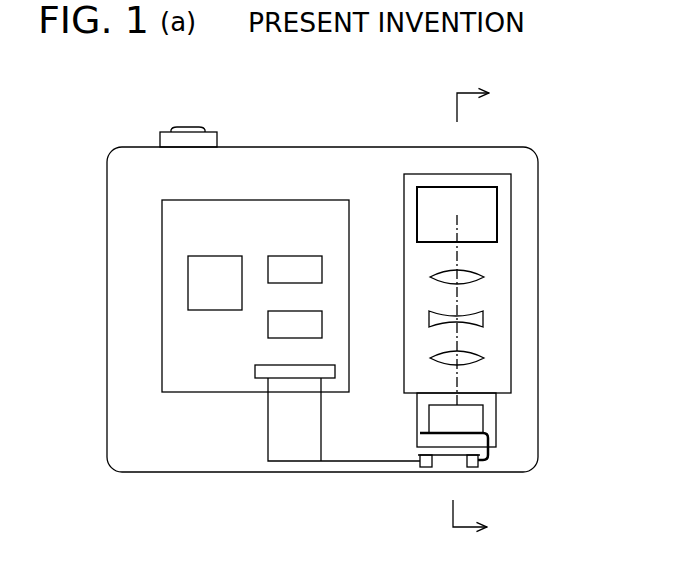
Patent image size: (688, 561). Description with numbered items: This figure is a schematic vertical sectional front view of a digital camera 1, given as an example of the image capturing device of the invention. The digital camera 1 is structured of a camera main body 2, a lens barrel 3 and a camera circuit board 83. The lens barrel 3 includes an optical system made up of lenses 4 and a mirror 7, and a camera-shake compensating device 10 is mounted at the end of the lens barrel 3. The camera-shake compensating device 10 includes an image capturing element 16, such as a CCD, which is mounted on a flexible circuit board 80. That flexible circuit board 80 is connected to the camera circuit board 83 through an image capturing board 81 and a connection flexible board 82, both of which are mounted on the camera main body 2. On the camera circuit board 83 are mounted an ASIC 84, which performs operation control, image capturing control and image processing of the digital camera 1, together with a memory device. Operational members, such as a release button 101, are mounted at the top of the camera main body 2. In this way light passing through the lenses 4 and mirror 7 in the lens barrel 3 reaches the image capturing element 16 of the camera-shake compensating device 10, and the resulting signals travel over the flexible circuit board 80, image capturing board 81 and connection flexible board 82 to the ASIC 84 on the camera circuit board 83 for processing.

The digital camera 1 is at (572, 151).
The camera main body 2 is at (377, 147).
The lens barrel 3 is at (511, 198).
The lenses 4 is at (484, 358).
The mirror 7 is at (475, 187).
The camera-shake compensating device 10 is at (497, 407).
The image capturing element 16 is at (487, 402).
The flexible circuit board 80 is at (490, 434).
The image capturing board 81 is at (440, 463).
The connection flexible board 82 is at (348, 463).
The camera circuit board 83 is at (207, 372).
The ASIC 84 is at (188, 283).
The release button 101 is at (188, 127).